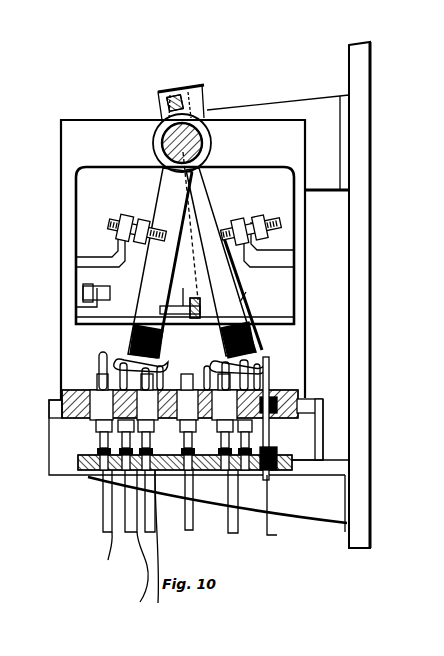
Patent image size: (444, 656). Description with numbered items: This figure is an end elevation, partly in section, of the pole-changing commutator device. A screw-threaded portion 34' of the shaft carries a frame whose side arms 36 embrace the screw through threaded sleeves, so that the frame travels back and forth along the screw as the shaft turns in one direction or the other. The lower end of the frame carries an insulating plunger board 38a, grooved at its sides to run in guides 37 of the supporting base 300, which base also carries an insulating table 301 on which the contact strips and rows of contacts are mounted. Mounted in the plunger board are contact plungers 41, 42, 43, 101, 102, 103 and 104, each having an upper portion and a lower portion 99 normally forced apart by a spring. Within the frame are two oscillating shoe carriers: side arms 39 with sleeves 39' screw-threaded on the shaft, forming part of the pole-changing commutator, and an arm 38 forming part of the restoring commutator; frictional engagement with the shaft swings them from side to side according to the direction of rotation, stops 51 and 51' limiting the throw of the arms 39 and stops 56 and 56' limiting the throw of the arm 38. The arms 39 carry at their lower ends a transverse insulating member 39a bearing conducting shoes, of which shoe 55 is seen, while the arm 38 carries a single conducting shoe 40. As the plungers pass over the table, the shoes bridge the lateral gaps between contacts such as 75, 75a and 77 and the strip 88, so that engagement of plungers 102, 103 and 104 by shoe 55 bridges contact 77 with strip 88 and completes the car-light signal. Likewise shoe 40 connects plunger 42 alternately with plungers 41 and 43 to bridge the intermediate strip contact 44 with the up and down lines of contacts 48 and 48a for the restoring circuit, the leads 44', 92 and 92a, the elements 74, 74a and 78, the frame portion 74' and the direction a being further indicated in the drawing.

The supporting base 300 is at (347, 522).
The outer frame 74' is at (174, 290).
The side arms of frame 36 is at (61, 243).
The direction a is at (28, 230).
The screw-threaded portion of shaft 34' is at (154, 130).
The pivot hub 39' is at (205, 128).
The conducting shoe 40 is at (165, 358).
The side arms of oscillating shoe carrier 39 is at (227, 255).
The transverse member of insulation 39a is at (223, 358).
The stop 51 is at (137, 217).
The stop 51' is at (251, 217).
The stop 56 is at (109, 286).
The arm 38 is at (180, 294).
The stop 56' is at (234, 288).
The conducting shoe 55 is at (264, 342).
The guides 37 is at (308, 400).
The insulating plate or plunger board 38a is at (86, 423).
The contact 48a is at (174, 437).
The contact 48 is at (88, 470).
The insulating table 301 is at (80, 471).
The contact plunger 43 is at (99, 360).
The contact plunger 42 is at (120, 371).
The contact plunger 41 is at (142, 382).
The contact plunger 101 is at (170, 378).
The contact plunger 102 is at (209, 378).
The contact plunger 103 is at (272, 353).
The contact plunger 104 is at (272, 373).
The contact 75a is at (268, 444).
The contact 75 is at (292, 482).
The lower portion of contact plunger 99 is at (292, 436).
The tray 74a is at (270, 531).
The plug pin 74 is at (145, 501).
The contact 77 is at (212, 472).
The plug pin 78 is at (226, 517).
The contact strip 88 is at (234, 472).
The intermediate strip contact 44 is at (111, 557).
The lead wire 44' is at (129, 571).
The lead wire 92 is at (98, 505).
The lead wire 92a is at (138, 550).